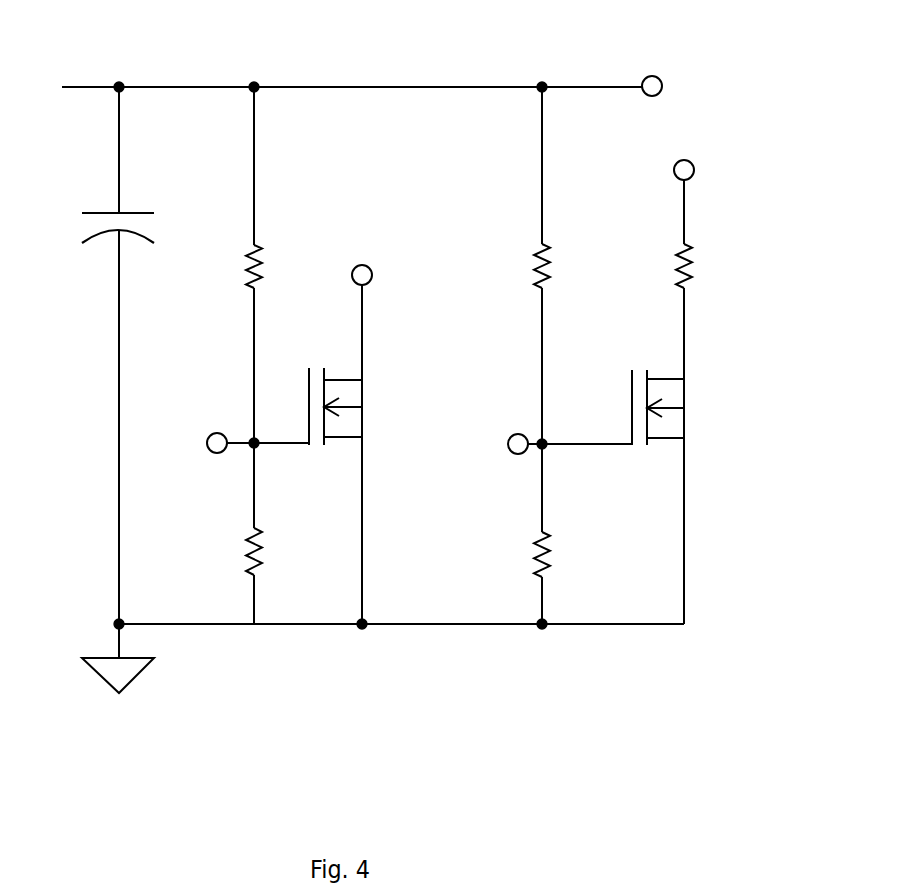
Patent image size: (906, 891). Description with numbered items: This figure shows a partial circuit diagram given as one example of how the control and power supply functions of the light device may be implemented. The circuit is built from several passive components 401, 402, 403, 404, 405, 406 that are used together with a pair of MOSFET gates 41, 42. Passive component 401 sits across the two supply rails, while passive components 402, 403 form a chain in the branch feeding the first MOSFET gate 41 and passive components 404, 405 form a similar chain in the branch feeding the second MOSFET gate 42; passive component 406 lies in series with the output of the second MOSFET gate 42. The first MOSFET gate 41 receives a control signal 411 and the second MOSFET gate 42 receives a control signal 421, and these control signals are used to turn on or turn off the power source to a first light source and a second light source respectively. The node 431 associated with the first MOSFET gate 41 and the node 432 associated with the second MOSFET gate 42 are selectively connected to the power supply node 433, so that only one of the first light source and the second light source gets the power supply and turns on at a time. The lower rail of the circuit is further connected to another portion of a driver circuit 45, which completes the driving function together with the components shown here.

The passive component 401 is at (90, 213).
The passive component 402 is at (253, 253).
The passive component 403 is at (263, 558).
The passive component 404 is at (552, 255).
The passive component 405 is at (555, 563).
The passive component 406 is at (695, 267).
The MOSFET gate 41 is at (339, 440).
The MOSFET gate 42 is at (662, 440).
The control signal 411 is at (210, 440).
The control signal 421 is at (511, 439).
The node 431 is at (370, 267).
The node 432 is at (694, 172).
The power supply node 433 is at (660, 78).
The driver circuit 45 is at (125, 673).